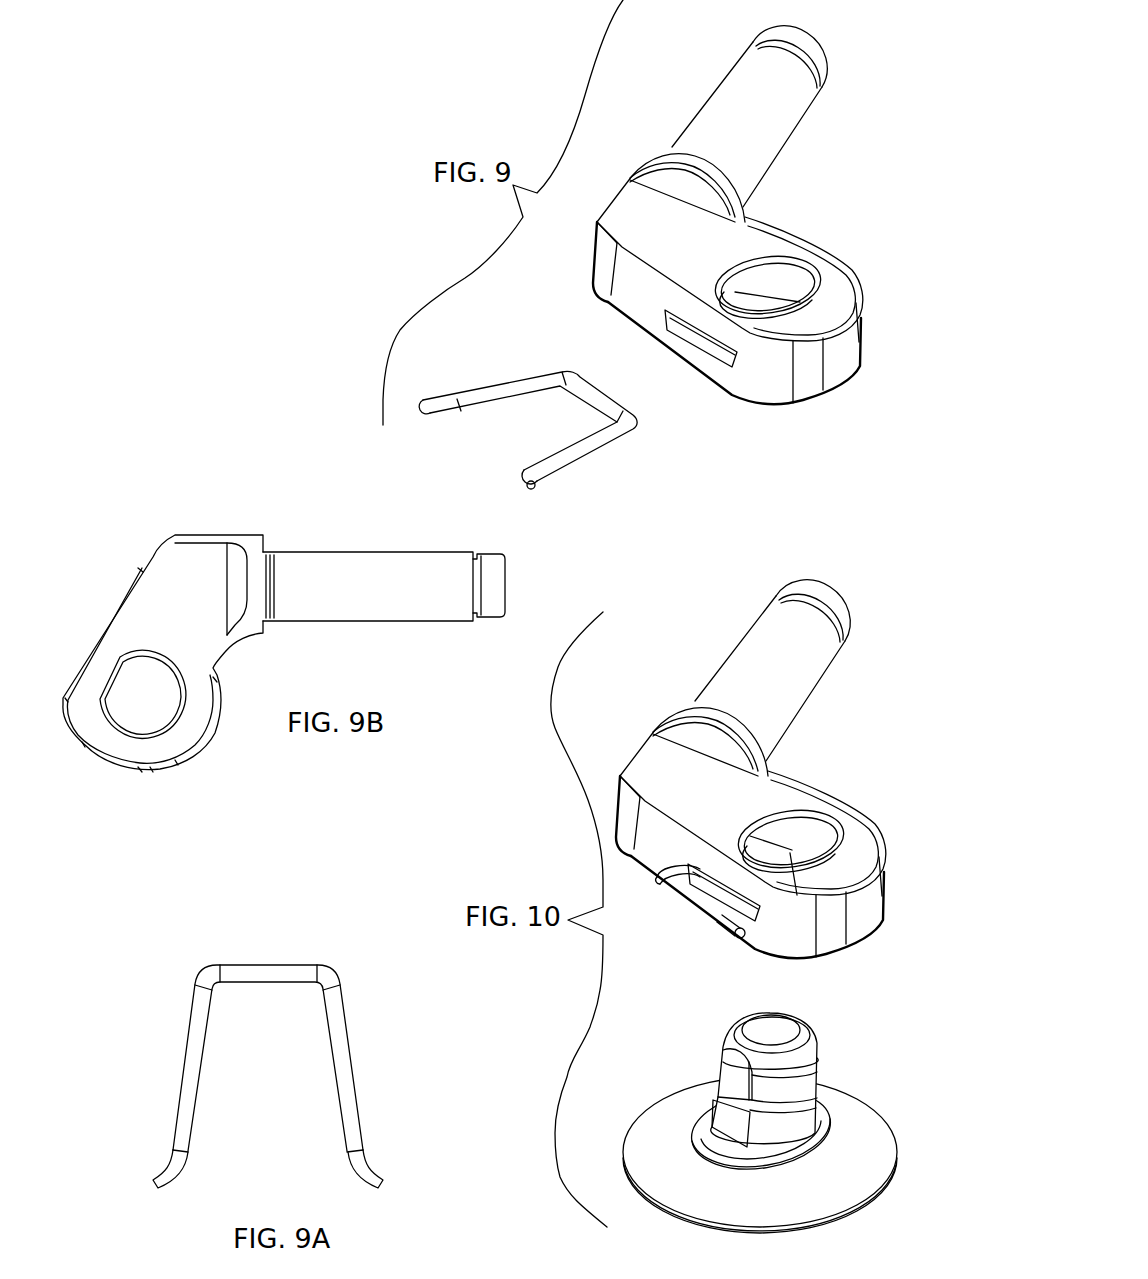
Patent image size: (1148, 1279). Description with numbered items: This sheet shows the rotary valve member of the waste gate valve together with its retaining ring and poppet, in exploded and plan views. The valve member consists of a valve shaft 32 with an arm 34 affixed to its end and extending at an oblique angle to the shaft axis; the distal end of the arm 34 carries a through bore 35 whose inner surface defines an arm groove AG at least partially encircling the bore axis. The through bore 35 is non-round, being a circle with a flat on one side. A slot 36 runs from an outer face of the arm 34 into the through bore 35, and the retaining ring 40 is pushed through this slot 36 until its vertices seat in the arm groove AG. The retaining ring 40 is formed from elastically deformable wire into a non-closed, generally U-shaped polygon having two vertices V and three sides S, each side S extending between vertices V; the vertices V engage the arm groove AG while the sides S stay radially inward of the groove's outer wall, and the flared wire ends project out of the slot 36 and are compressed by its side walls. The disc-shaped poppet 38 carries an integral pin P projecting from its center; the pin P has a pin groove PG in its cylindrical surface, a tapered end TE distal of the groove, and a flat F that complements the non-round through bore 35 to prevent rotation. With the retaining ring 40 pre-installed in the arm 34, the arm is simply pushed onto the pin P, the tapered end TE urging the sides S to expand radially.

In FIG. 9, the valve shaft 32 is at (798, 117).
In FIG. 9B, the valve shaft 32 is at (342, 567).
In FIG. 10, the valve shaft 32 is at (752, 658).
In FIG. 9, the arm 34 is at (843, 287).
In FIG. 9B, the arm 34 is at (138, 608).
In FIG. 10, the arm 34 is at (870, 840).
In FIG. 9, the through bore 35 is at (772, 275).
In FIG. 9B, the through bore 35 is at (142, 698).
In FIG. 9, the slot 36 is at (705, 348).
In FIG. 10, the slot 36 is at (722, 897).
In FIG. 10, the poppet 38 is at (880, 1161).
In FIG. 9, the retaining ring 40 is at (498, 395).
In FIG. 9A, the retaining ring 40 is at (294, 965).
In FIG. 10, the retaining ring 40 is at (767, 847).
In FIG. 9, the arm groove AG is at (768, 300).
In FIG. 10, the arm groove AG is at (797, 895).
In FIG. 9A, the vertices V is at (207, 966).
In FIG. 9A, the sides S is at (263, 967).
In FIG. 10, the pin P is at (778, 1032).
In FIG. 10, the tapered end TE is at (810, 1050).
In FIG. 10, the flat F is at (737, 1077).
In FIG. 10, the pin groove PG is at (812, 1110).